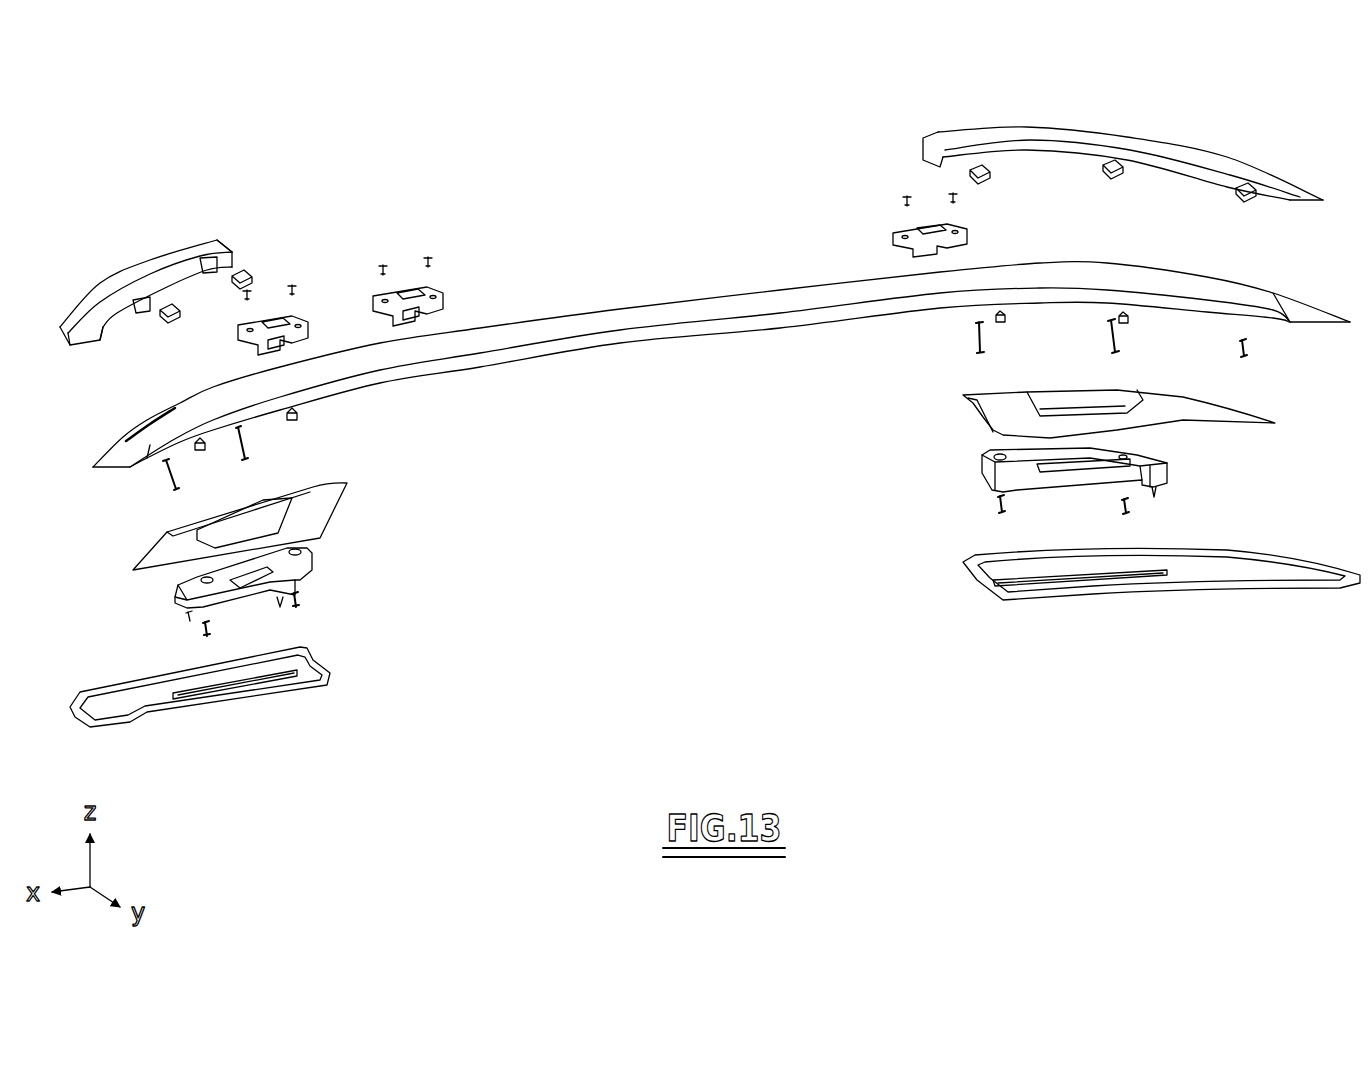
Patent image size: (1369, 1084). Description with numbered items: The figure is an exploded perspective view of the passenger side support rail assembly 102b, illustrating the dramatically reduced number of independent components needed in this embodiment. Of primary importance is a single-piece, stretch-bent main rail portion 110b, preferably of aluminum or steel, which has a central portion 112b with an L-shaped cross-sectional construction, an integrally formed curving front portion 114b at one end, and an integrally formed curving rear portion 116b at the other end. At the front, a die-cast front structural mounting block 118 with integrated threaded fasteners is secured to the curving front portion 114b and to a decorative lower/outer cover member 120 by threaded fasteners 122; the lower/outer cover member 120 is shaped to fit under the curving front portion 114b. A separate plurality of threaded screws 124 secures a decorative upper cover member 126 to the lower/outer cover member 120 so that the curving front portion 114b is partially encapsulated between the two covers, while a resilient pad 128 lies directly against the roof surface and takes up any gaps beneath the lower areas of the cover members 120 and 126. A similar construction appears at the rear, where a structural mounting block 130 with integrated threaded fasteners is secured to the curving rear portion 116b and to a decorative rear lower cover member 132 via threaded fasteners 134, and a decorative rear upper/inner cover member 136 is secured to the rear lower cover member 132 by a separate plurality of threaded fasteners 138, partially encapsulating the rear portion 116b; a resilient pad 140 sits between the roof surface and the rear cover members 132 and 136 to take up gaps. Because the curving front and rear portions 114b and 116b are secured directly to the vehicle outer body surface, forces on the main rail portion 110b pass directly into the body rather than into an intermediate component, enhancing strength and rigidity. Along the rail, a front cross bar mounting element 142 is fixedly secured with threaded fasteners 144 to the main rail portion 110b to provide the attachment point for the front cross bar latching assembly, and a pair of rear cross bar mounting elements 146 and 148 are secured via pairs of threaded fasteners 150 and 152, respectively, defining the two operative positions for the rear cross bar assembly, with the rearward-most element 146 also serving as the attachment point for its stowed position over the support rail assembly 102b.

The support rail assembly 102b is at (606, 242).
The main rail portion 110b is at (750, 287).
The central portion 112b is at (620, 326).
The curving front portion 114b is at (1261, 291).
The curving rear portion 116b is at (140, 424).
The front structural mounting block 118 is at (1160, 468).
The decorative lower/outer cover member 120 is at (985, 415).
The threaded fasteners 122 is at (1003, 509).
The threaded screws 124 is at (1240, 347).
The decorative upper cover member 126 is at (1112, 140).
The resilient pad 128 is at (1190, 574).
The structural mounting block 130 is at (305, 565).
The decorative rear lower cover member 132 is at (325, 493).
The threaded fasteners 134 is at (210, 626).
The decorative rear upper/inner cover member 136 is at (162, 268).
The threaded fasteners 138 is at (168, 480).
The resilient pad 140 is at (235, 700).
The front cross bar mounting element 142 is at (900, 235).
The threaded fasteners 144 is at (910, 202).
The rear cross bar mounting element 146 is at (275, 321).
The rear cross bar mounting element 148 is at (412, 295).
The threaded fasteners 150 is at (295, 293).
The threaded fasteners 152 is at (383, 273).